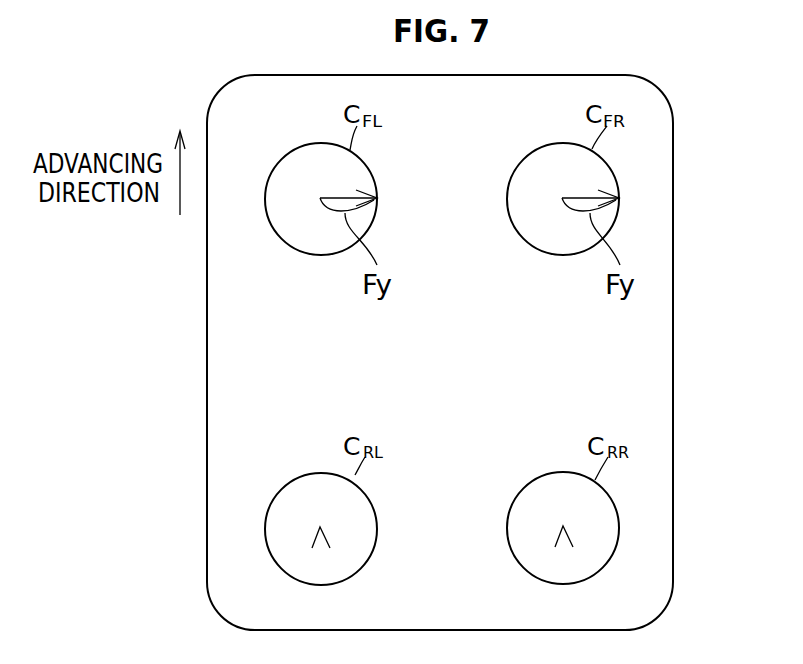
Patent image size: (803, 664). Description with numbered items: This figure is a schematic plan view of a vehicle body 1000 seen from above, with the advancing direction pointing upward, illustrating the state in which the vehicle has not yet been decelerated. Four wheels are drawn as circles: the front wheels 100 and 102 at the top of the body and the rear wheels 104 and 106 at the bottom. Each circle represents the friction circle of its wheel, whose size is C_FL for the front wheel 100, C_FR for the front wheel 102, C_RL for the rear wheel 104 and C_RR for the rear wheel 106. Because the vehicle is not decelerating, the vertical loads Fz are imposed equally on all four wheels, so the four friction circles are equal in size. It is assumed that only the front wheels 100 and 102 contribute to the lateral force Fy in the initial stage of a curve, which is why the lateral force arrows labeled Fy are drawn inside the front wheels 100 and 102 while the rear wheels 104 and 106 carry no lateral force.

The front wheel 100 is at (292, 142).
The front wheel 102 is at (519, 142).
The rear wheel 104 is at (276, 476).
The rear wheel 106 is at (518, 476).
The vehicle body 1000 is at (673, 158).